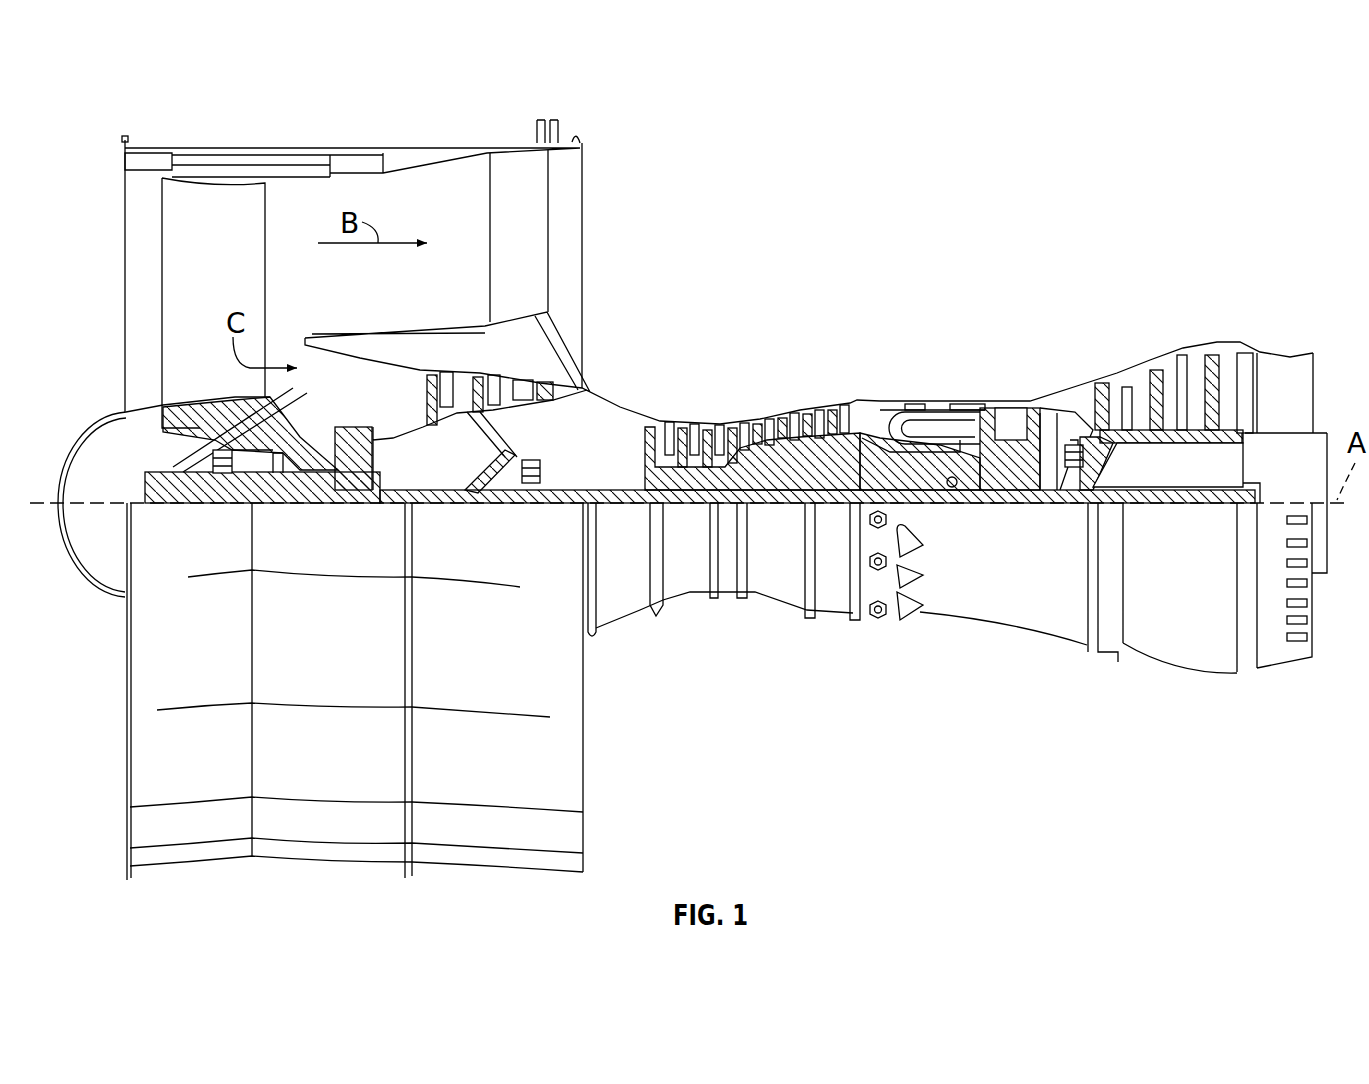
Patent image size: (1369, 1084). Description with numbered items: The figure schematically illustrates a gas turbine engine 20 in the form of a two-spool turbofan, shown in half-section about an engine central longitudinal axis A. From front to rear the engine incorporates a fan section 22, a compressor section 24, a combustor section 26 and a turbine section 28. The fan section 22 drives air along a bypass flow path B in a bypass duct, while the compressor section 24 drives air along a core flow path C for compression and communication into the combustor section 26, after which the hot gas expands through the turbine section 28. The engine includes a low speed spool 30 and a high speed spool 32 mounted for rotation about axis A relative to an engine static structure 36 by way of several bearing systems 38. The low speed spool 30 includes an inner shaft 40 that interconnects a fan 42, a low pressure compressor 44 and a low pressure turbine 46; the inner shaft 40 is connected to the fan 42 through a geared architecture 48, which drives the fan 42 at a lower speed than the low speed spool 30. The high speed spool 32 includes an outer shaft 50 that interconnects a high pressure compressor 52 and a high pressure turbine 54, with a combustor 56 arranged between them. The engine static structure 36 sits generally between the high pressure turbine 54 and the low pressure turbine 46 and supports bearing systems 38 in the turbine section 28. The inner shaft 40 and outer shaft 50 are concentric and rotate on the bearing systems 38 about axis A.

The gas turbine engine 20 is at (1140, 183).
The fan section 22 is at (232, 140).
The compressor section 24 is at (748, 325).
The combustor section 26 is at (930, 315).
The turbine section 28 is at (1075, 318).
The low speed spool 30 is at (800, 508).
The high speed spool 32 is at (850, 457).
The engine static structure 36 is at (838, 622).
The bearing systems 38 is at (215, 478).
The inner shaft 40 is at (595, 510).
The fan 42 is at (240, 276).
The low pressure compressor 44 is at (500, 387).
The low pressure turbine 46 is at (1170, 360).
The geared architecture 48 is at (355, 466).
The outer shaft 50 is at (955, 489).
The high pressure compressor 52 is at (757, 473).
The high pressure turbine 54 is at (1007, 407).
The combustor 56 is at (935, 425).